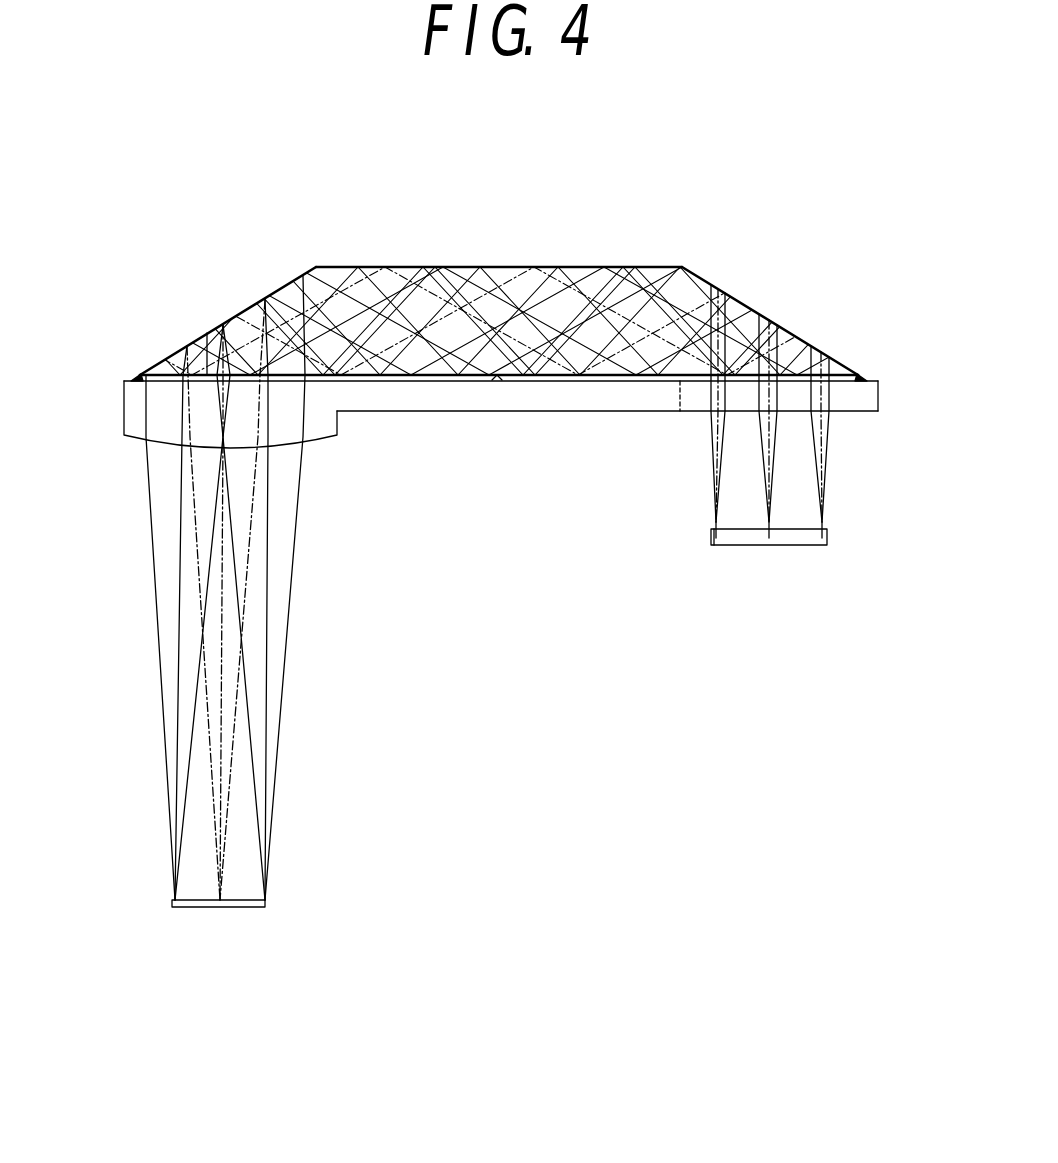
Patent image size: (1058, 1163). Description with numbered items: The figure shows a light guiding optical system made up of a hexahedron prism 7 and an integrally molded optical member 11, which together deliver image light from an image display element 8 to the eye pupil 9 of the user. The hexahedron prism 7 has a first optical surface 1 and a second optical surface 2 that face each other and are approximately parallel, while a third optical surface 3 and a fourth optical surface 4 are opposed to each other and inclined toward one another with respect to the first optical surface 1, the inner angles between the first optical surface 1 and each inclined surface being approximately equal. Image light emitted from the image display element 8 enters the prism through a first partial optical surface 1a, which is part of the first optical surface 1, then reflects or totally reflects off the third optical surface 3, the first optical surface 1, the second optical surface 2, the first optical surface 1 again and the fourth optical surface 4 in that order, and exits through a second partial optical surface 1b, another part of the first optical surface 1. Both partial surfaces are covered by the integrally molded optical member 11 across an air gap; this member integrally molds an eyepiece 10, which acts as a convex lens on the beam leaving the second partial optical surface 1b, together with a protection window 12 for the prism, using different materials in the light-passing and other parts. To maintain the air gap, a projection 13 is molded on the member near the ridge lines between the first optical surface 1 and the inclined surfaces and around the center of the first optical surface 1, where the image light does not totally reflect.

The first optical surface 1 is at (529, 332).
The first partial optical surface 1a is at (703, 400).
The second partial optical surface 1b is at (207, 333).
The second optical surface 2 is at (478, 266).
The third optical surface 3 is at (745, 307).
The fourth optical surface 4 is at (247, 305).
The hexahedron prism 7 is at (553, 262).
The image display element 8 is at (790, 547).
The eye pupil 9 is at (234, 908).
The eyepiece 10 is at (330, 437).
The integrally molded optical member 11 is at (529, 437).
The protection window 12 is at (866, 412).
The projection 13 is at (134, 376).